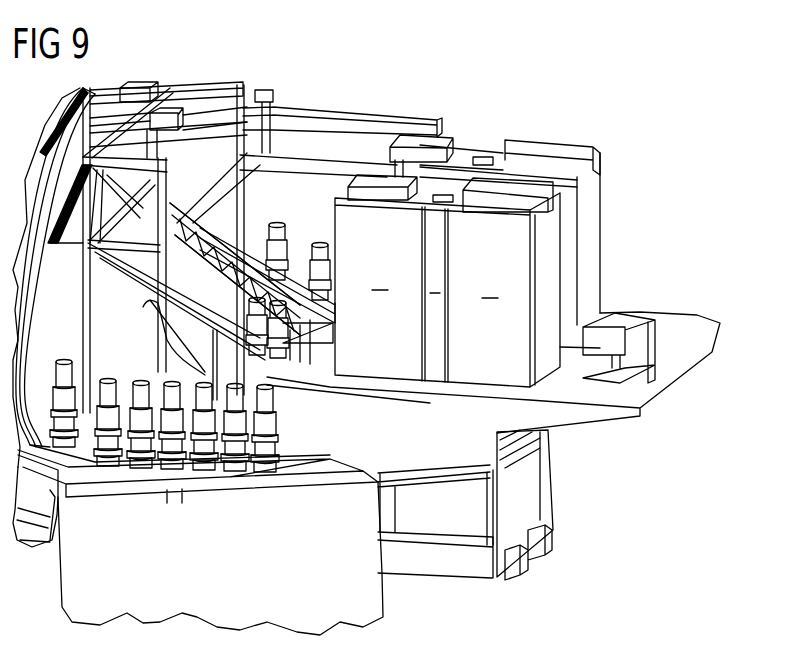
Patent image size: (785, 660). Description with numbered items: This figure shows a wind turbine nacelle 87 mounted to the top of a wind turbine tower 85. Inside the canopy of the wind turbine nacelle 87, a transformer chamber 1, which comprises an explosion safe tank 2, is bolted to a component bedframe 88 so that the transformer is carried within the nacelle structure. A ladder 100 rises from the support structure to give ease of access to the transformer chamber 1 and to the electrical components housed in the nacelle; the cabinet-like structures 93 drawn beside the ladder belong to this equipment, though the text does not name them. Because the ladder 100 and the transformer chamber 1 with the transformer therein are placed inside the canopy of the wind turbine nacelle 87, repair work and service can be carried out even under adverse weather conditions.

The transformer chamber 1 is at (575, 520).
The explosion safe tank 2 is at (515, 535).
The wind turbine tower 85 is at (365, 595).
The wind turbine nacelle 87 is at (660, 417).
The component bedframe 88 is at (440, 452).
The control cabinets 93 is at (627, 188).
The ladder 100 is at (222, 277).